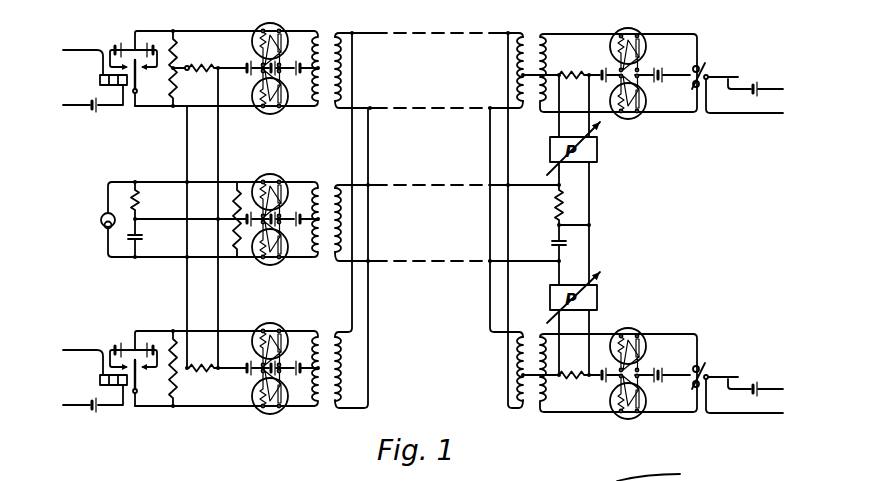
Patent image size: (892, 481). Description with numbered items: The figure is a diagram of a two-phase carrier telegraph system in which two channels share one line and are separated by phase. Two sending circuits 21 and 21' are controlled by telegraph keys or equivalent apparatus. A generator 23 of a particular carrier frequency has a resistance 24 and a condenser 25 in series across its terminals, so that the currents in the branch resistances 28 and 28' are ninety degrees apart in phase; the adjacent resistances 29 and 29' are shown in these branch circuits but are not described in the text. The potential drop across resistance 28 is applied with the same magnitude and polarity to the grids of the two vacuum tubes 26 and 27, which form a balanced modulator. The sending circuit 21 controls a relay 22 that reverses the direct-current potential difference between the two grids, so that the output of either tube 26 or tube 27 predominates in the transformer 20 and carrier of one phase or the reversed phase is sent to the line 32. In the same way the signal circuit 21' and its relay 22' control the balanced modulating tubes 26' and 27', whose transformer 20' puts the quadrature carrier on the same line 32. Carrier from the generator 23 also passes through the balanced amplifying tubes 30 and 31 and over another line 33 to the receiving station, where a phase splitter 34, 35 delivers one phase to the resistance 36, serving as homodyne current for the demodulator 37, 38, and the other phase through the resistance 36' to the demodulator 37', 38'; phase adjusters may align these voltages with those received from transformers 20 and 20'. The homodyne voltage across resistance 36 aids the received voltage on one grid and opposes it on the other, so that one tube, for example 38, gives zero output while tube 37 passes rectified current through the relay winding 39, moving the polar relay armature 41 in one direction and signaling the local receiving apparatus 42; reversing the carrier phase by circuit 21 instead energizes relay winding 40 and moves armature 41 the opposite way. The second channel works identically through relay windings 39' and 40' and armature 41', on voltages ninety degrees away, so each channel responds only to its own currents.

The transformer 20 is at (326, 62).
The transformer 20' is at (326, 361).
The sending circuit 21 is at (91, 69).
The signal circuit 21' is at (91, 369).
The relay 22 is at (141, 68).
The relay 22' is at (141, 368).
The generator 23 is at (100, 221).
The resistance 24 is at (138, 207).
The condenser 25 is at (142, 239).
The vacuum tube 26 is at (270, 36).
The balanced modulating tube 26' is at (270, 335).
The vacuum tube 27 is at (270, 102).
The balanced modulating tube 27' is at (270, 402).
The resistance 28 is at (209, 78).
The resistance 28' is at (217, 360).
The potentiometer resistance 29 is at (186, 68).
The potentiometer resistance 29' is at (188, 368).
The balanced amplifying tube 30 is at (270, 187).
The balanced amplifying tube 31 is at (270, 255).
The line 32 is at (429, 70).
The line 33 is at (447, 223).
The phase splitter 34 is at (547, 193).
The phase splitter 35 is at (551, 244).
The resistance 36 is at (561, 67).
The resistance 36' is at (561, 382).
The demodulator tube 37 is at (628, 42).
The demodulator tube 37' is at (628, 341).
The demodulator tube 38 is at (628, 107).
The demodulator tube 38' is at (628, 408).
The relay winding 39 is at (685, 61).
The relay winding 39' is at (685, 361).
The relay winding 40 is at (688, 85).
The relay winding 40' is at (687, 385).
The relay armature 41 is at (743, 79).
The relay armature 41' is at (743, 377).
The local receiving apparatus 42 is at (773, 233).